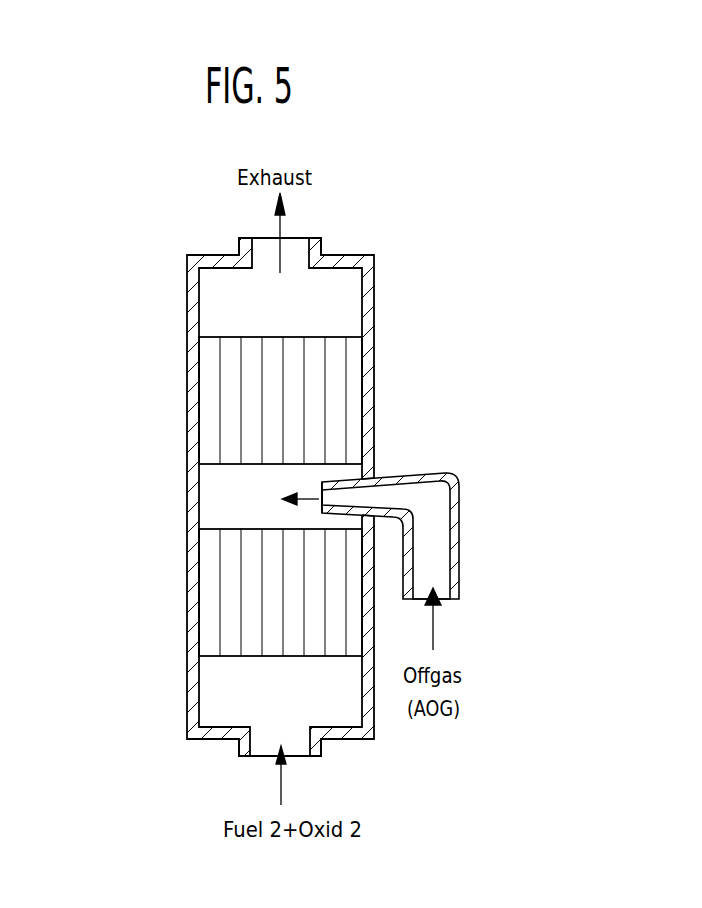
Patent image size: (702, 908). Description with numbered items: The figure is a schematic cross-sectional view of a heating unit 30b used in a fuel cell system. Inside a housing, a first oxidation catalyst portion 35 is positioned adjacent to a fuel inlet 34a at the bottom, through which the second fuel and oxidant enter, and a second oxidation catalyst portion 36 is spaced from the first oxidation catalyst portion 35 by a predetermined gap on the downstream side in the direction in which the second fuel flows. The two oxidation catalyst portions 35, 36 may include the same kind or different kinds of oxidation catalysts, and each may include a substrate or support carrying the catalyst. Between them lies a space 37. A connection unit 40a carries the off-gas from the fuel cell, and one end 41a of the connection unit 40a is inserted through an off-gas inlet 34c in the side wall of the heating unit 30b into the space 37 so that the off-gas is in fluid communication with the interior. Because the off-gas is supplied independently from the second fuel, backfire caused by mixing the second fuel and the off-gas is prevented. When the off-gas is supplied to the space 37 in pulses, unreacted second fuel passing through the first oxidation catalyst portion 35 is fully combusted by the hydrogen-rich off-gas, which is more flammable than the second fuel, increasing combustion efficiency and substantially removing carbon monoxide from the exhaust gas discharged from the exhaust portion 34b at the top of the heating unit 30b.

The heating unit 30b is at (138, 194).
The fuel inlet 34a is at (257, 758).
The exhaust portion 34b is at (298, 237).
The offgas inlet opening 34c is at (372, 472).
The first oxidation catalyst portion 35 is at (190, 588).
The second oxidation catalyst portion 36 is at (190, 403).
The space 37 is at (210, 502).
The connection unit 40a is at (459, 567).
The one end of the connection unit 41a is at (347, 475).